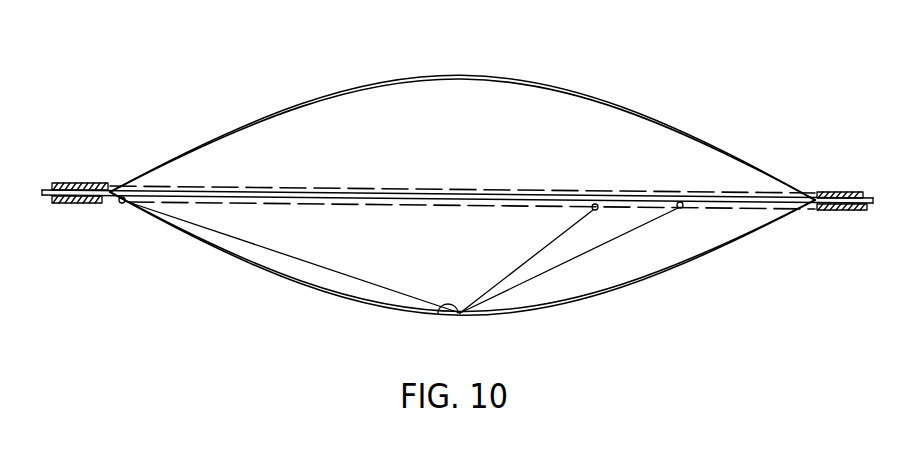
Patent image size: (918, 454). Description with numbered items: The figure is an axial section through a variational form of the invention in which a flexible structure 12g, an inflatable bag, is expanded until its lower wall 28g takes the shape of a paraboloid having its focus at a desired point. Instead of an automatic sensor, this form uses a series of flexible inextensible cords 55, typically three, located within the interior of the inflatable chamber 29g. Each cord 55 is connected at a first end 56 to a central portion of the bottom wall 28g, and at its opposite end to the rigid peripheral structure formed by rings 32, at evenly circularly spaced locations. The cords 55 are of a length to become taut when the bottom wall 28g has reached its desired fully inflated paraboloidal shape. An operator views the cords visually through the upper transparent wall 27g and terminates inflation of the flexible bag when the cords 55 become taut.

The flexible structure 12g is at (462, 165).
The upper transparent wall 27g is at (318, 98).
The lower wall 28g is at (707, 258).
The inflatable chamber 29g is at (457, 175).
The rings 32 is at (78, 184).
The flexible inextensible cords 55 is at (503, 278).
The first end 56 is at (438, 314).